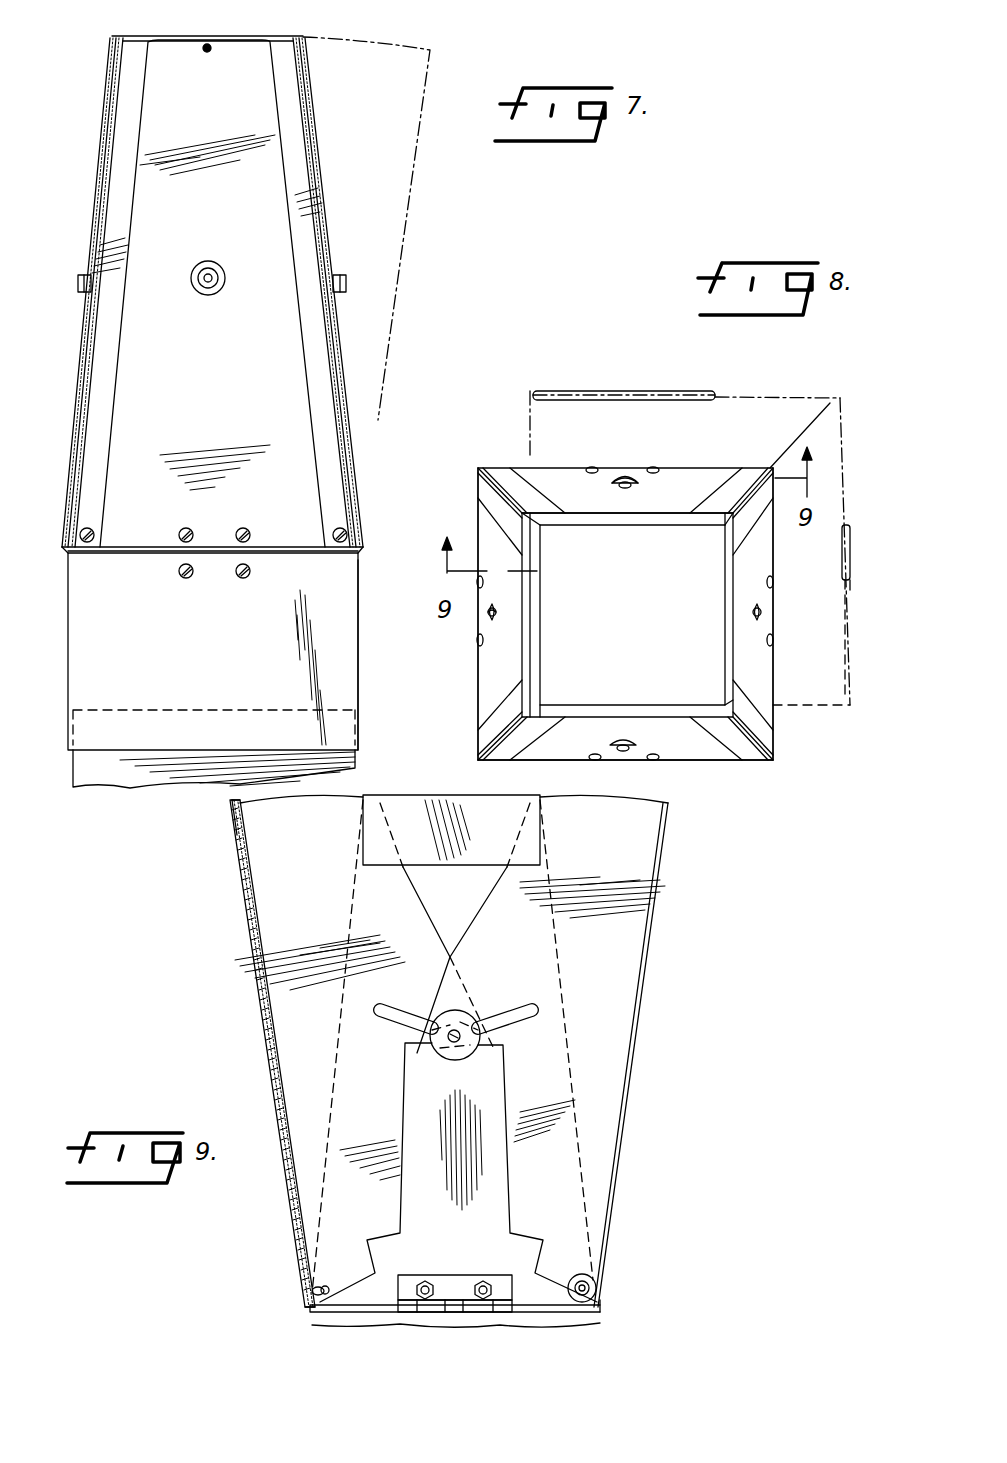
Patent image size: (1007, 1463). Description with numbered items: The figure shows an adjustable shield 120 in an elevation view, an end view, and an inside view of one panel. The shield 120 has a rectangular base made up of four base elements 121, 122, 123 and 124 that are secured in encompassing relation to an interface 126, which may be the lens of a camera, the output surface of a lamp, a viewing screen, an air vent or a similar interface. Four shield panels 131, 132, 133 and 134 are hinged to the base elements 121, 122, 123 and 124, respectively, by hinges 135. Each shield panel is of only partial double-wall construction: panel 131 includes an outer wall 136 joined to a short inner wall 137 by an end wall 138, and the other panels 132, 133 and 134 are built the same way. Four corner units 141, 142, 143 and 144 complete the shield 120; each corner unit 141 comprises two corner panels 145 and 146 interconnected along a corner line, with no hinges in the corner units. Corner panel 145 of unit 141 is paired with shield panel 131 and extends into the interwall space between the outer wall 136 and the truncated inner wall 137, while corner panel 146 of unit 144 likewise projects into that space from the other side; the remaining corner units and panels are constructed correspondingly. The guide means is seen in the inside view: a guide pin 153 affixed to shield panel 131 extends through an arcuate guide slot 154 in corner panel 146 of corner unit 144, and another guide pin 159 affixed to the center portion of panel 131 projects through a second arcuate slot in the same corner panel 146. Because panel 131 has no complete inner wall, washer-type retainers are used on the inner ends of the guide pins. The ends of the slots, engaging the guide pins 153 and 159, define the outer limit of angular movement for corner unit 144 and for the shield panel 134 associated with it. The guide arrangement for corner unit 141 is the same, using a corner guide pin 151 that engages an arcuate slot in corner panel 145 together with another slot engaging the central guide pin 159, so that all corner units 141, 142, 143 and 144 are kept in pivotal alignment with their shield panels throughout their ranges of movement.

In FIG. 7, the adjustable shield 120 is at (86, 188).
In FIG. 8, the adjustable shield 120 is at (785, 757).
In FIG. 9, the base element 121 is at (515, 1300).
In FIG. 7, the base element 122 is at (232, 645).
In FIG. 7, the base element 123 is at (360, 645).
In FIG. 9, the base element 123 is at (602, 1312).
In FIG. 7, the base element 124 is at (62, 640).
In FIG. 9, the base element 124 is at (310, 1312).
In FIG. 7, the interface 126 is at (215, 707).
In FIG. 8, the interface 126 is at (643, 629).
In FIG. 8, the shield panel 131 is at (660, 388).
In FIG. 7, the shield panel 132 is at (228, 35).
In FIG. 8, the shield panel 132 is at (695, 760).
In FIG. 7, the shield panel 133 is at (330, 195).
In FIG. 8, the shield panel 133 is at (773, 560).
In FIG. 7, the shield panel 134 is at (85, 333).
In FIG. 8, the shield panel 134 is at (482, 663).
In FIG. 9, the shield panel 134 is at (232, 855).
In FIG. 7, the hinge 135 is at (165, 560).
In FIG. 9, the hinge 135 is at (453, 1275).
In FIG. 8, the outer wall 136 is at (575, 468).
In FIG. 9, the outer wall 136 is at (242, 905).
In FIG. 9, the inner wall 137 is at (248, 843).
In FIG. 8, the end wall 138 is at (662, 522).
In FIG. 9, the end wall 138 is at (232, 803).
In FIG. 8, the corner unit 141 is at (815, 395).
In FIG. 9, the corner unit 141 is at (672, 895).
In FIG. 7, the corner unit 142 is at (315, 120).
In FIG. 8, the corner unit 142 is at (762, 712).
In FIG. 7, the corner unit 143 is at (108, 88).
In FIG. 8, the corner unit 143 is at (505, 718).
In FIG. 8, the corner unit 144 is at (476, 498).
In FIG. 9, the corner unit 144 is at (252, 968).
In FIG. 8, the corner panel 145 is at (528, 395).
In FIG. 9, the corner panel 145 is at (248, 920).
In FIG. 8, the corner panel 146 is at (848, 465).
In FIG. 9, the corner panel 146 is at (280, 1010).
In FIG. 8, the corner guide pin 151 is at (752, 470).
In FIG. 9, the corner guide pin 151 is at (598, 1285).
In FIG. 8, the guide pin 153 is at (500, 465).
In FIG. 9, the guide pin 153 is at (330, 1285).
In FIG. 9, the arcuate guide slot 154 is at (310, 1285).
In FIG. 7, the guide pin 159 is at (210, 268).
In FIG. 8, the guide pin 159 is at (628, 470).
In FIG. 9, the guide pin 159 is at (456, 1032).